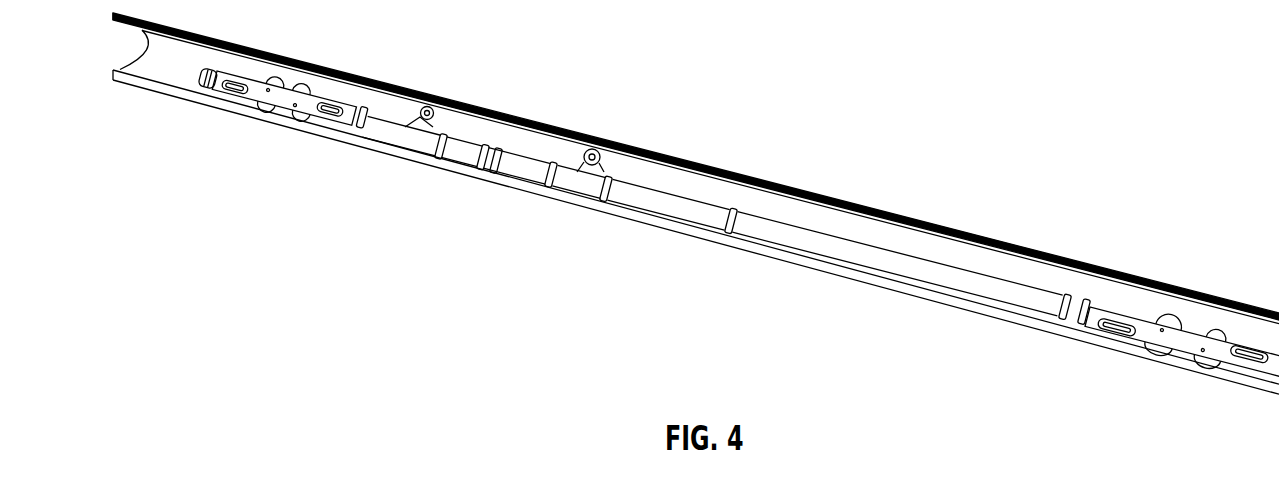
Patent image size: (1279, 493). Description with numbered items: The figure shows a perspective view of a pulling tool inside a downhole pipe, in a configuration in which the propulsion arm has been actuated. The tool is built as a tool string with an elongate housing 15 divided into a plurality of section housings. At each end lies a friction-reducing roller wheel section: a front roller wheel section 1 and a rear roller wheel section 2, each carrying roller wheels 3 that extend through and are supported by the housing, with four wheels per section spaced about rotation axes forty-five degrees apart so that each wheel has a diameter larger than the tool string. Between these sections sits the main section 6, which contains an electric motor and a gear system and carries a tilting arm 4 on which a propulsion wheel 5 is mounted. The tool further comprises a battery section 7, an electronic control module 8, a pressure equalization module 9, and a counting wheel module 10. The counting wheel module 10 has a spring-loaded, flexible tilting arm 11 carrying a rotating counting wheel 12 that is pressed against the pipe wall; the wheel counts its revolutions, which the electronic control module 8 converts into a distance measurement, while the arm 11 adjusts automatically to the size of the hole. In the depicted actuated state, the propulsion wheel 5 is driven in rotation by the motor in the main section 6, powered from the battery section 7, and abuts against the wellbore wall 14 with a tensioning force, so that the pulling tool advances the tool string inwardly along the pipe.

The front roller wheel section 1 is at (1197, 350).
The rear roller wheel section 2 is at (289, 99).
The roller wheels 3 is at (273, 80).
The tilting arm 4 is at (582, 162).
The propulsion wheel 5 is at (592, 166).
The main section 6 is at (584, 178).
The battery section 7 is at (912, 270).
The electronic control module 8 is at (710, 216).
The pressure equalization module 9 is at (466, 153).
The counting wheel module 10 is at (361, 127).
The tilting arm 11 is at (418, 108).
The rotating counting wheel 12 is at (432, 104).
The wellbore wall 14 is at (690, 160).
The elongate housing 15 is at (742, 192).